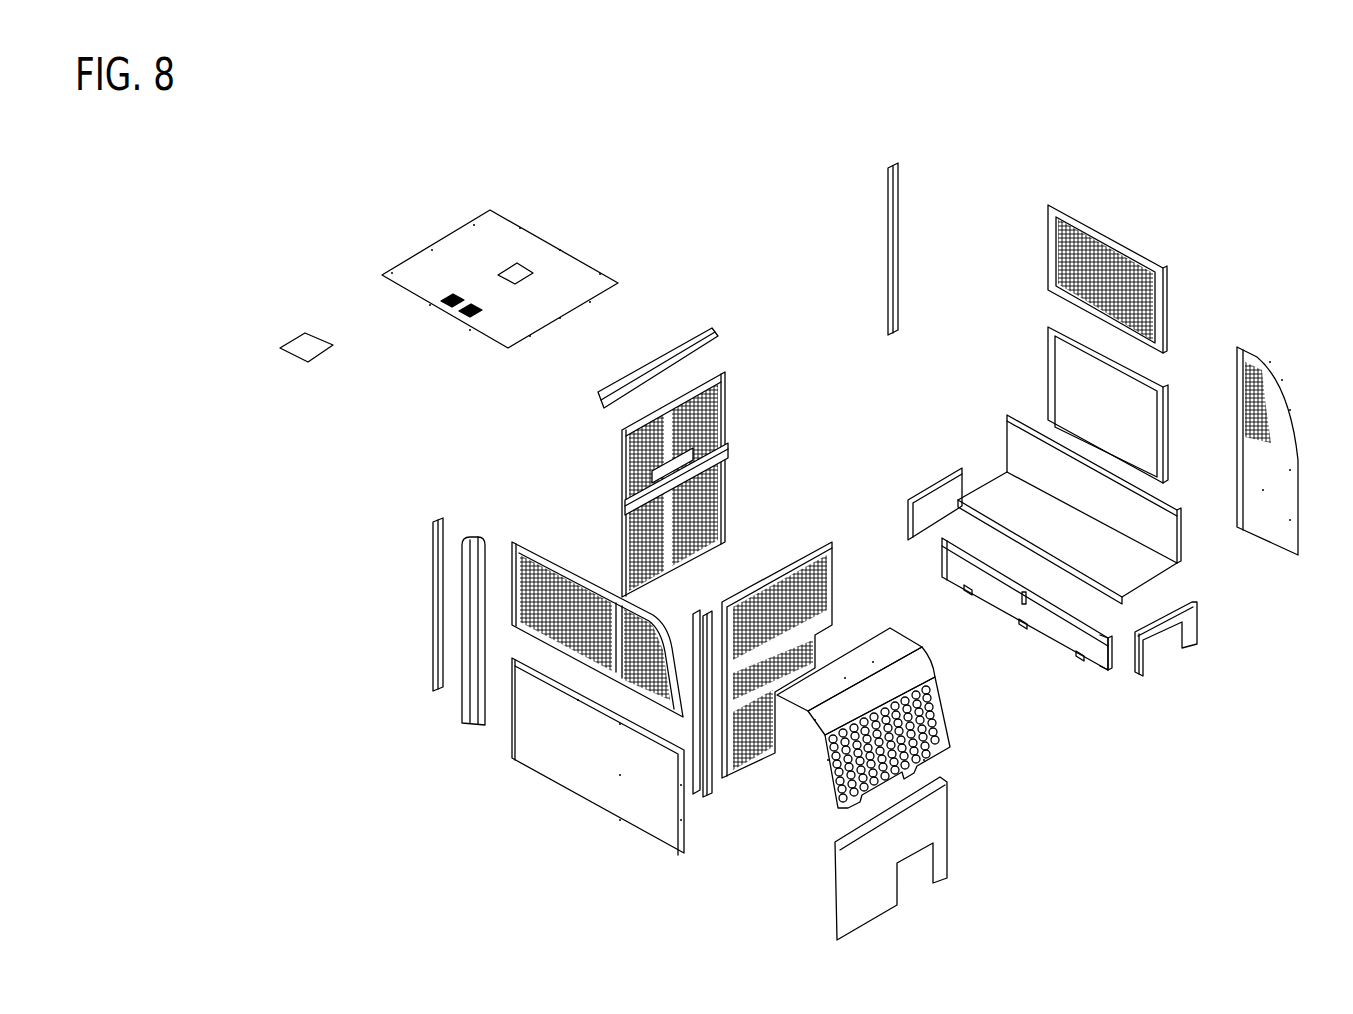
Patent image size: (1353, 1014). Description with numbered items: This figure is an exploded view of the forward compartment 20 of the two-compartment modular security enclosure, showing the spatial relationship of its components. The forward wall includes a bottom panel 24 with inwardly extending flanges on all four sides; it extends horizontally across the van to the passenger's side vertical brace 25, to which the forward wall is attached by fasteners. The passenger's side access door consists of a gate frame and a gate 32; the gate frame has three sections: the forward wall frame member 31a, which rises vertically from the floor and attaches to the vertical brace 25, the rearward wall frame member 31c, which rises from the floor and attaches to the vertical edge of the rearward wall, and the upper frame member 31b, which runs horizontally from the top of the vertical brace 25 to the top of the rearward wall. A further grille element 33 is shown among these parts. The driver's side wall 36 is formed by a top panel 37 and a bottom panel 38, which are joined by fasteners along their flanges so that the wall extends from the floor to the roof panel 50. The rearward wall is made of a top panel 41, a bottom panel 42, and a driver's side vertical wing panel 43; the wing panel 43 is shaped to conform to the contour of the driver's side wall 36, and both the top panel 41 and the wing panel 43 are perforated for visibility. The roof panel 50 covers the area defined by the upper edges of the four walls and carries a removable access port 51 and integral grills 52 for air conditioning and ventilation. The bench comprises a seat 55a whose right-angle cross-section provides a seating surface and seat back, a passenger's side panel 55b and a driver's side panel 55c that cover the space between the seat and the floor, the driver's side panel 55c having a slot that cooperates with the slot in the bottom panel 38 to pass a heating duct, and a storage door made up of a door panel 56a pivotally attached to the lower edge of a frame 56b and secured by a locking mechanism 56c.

The forward compartment 20 is at (759, 115).
The bottom panel 24 is at (575, 762).
The vertical brace 25 is at (467, 707).
The forward wall frame member 31a is at (425, 637).
The upper frame member 31b is at (640, 372).
The rearward wall frame member 31c is at (882, 255).
The gate 32 is at (728, 408).
The grille panel 33 is at (581, 597).
The driver's side wall 36 is at (953, 820).
The top panel 37 is at (913, 673).
The bottom panel 38 is at (928, 830).
The top panel 41 is at (1173, 285).
The bottom panel 42 is at (1137, 405).
The driver's side vertical wing panel 43 is at (1283, 457).
The roof panel 50 is at (460, 245).
The removable access port 51 is at (305, 353).
The integral grills 52 is at (455, 318).
The seat 55a is at (1090, 552).
The passenger's side panel 55b is at (915, 484).
The driver's side panel 55c is at (1192, 645).
The door panel 56a is at (1060, 628).
The frame 56b is at (1112, 662).
The locking mechanism 56c is at (1022, 608).